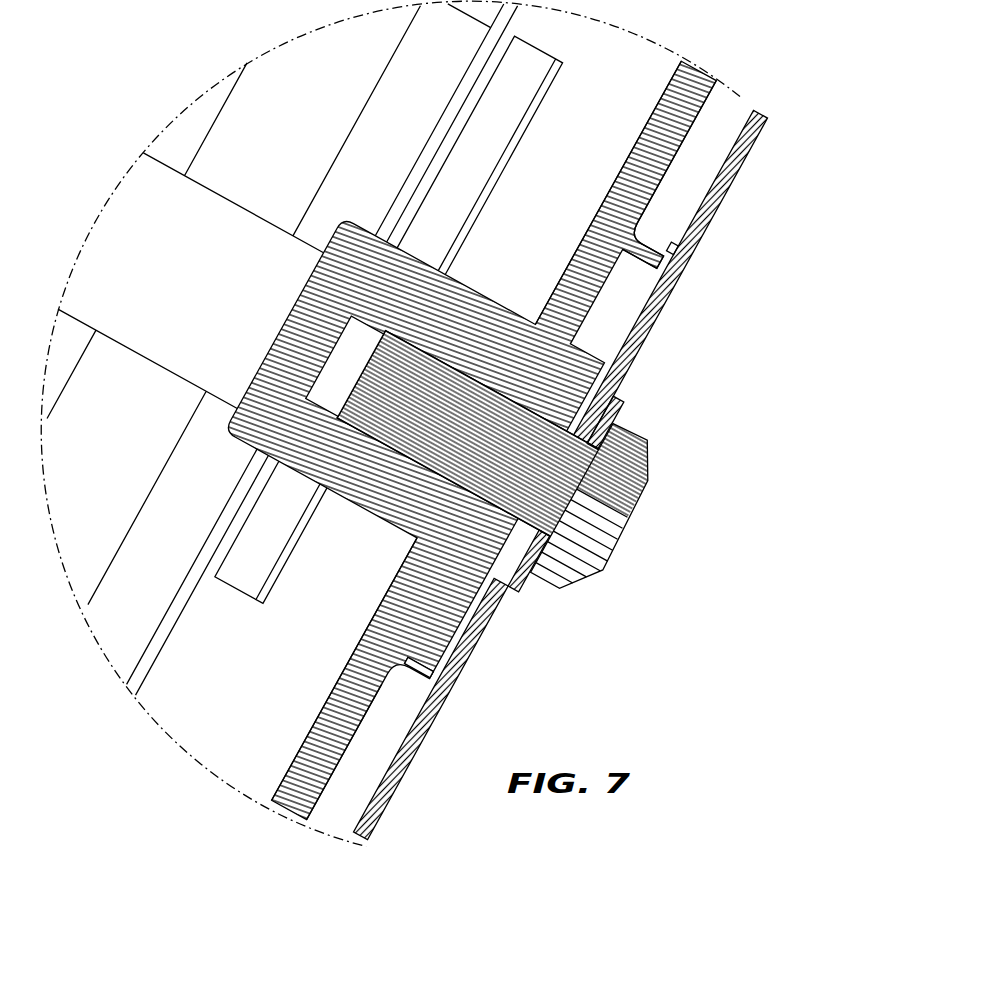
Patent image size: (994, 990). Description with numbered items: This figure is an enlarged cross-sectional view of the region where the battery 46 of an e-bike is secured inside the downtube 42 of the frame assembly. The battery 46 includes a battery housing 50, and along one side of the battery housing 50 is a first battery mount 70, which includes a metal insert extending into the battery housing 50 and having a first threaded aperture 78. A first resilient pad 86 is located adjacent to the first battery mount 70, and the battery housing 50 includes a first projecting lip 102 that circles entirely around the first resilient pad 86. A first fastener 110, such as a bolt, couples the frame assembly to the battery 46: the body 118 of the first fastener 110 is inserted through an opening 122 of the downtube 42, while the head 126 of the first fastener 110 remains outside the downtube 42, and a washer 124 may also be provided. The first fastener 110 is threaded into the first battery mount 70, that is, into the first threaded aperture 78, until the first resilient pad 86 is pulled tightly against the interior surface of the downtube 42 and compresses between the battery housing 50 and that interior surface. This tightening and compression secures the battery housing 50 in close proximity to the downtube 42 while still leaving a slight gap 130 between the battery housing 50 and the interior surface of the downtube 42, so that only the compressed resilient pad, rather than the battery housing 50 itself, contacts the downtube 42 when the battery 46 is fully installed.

The downtube 42 is at (735, 200).
The battery 46 is at (672, 118).
The battery housing 50 is at (662, 181).
The first battery mount 70 is at (548, 400).
The first threaded aperture 78 is at (380, 458).
The first resilient pad 86 is at (596, 353).
The first projecting lip 102 is at (688, 258).
The first fastener 110 is at (648, 438).
The body 118 is at (375, 370).
The opening 122 is at (598, 561).
The washer 124 is at (624, 413).
The head 126 is at (643, 478).
The gap 130 is at (663, 228).